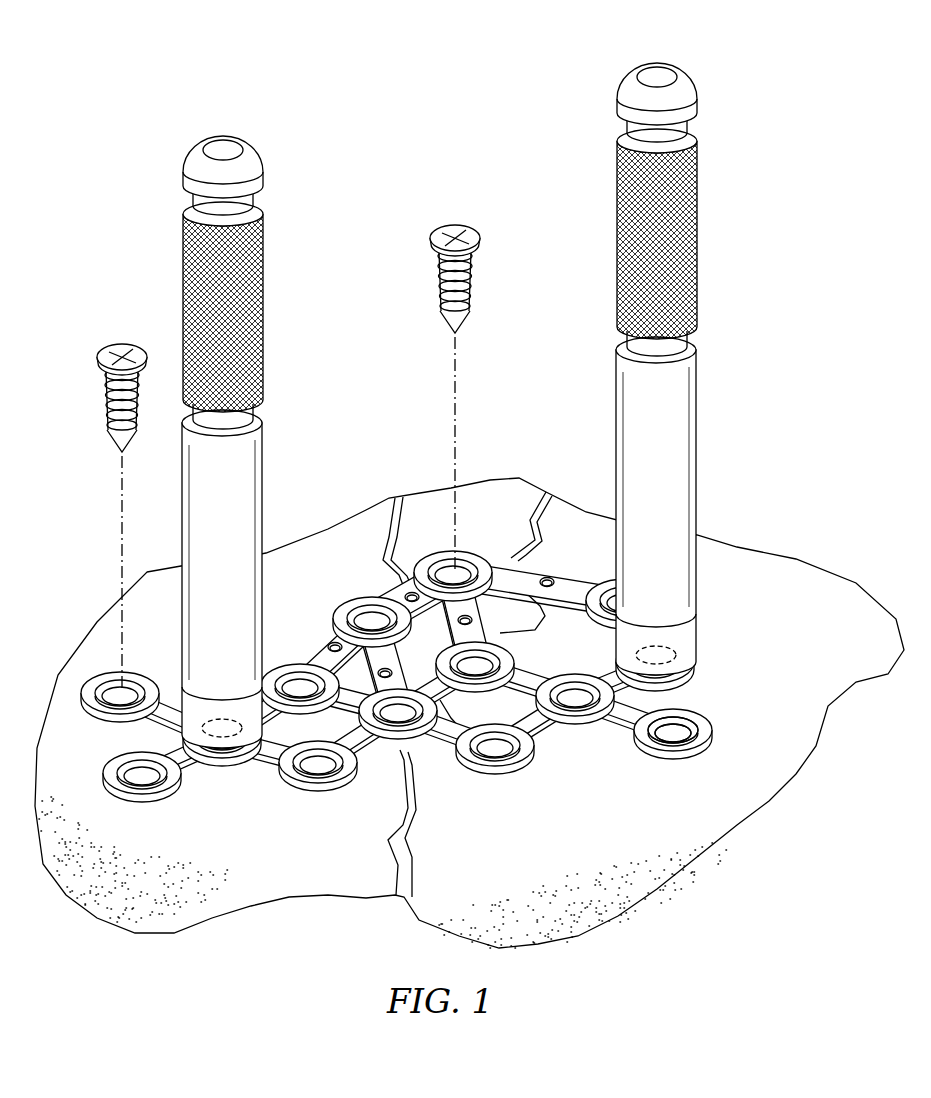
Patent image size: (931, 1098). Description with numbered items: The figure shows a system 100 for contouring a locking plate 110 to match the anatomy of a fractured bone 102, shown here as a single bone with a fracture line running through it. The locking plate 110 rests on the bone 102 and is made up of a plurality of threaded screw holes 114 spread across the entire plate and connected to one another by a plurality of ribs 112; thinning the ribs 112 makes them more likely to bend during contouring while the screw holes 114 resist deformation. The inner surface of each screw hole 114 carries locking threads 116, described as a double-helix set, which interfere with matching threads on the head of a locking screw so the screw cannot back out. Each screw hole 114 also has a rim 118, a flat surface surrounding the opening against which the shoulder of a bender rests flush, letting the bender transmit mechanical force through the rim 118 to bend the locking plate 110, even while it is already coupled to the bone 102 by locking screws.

The system 100 is at (465, 478).
The fractured bone 102 is at (737, 548).
The locking plate 110 is at (433, 699).
The ribs 112 is at (617, 733).
The threaded screw holes 114 is at (672, 733).
The locking threads 116 is at (684, 736).
The rim 118 is at (710, 730).